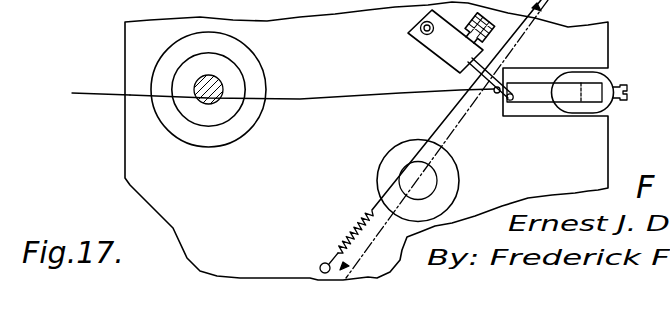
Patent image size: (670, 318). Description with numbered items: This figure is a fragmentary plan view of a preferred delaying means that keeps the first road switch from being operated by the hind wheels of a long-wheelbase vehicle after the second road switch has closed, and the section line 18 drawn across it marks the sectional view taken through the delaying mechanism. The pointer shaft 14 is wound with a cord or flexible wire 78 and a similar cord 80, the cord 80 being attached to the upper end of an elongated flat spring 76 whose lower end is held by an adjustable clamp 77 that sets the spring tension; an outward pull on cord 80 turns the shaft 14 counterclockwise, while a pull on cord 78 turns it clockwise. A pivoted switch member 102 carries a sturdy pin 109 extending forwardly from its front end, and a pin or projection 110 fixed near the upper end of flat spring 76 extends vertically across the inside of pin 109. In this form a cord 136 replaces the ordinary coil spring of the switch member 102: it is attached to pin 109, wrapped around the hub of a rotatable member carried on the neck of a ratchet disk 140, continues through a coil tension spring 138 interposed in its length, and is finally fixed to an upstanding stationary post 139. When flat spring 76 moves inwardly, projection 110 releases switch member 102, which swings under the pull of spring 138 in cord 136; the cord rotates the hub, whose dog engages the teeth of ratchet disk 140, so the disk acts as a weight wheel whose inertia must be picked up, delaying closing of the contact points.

The pointer shaft 14 is at (222, 82).
The section line 18 is at (332, 287).
The flat spring 76 is at (530, 90).
The clamp 77 is at (602, 77).
The cord or flexible wire 78 is at (90, 92).
The cord or flexible wire 80 is at (307, 97).
The switch member 102 is at (420, 47).
The pin 109 is at (469, 67).
The pin or projection 110 is at (488, 118).
The cord 136 is at (447, 113).
The coil tension spring 138 is at (357, 219).
The stationary post 139 is at (318, 264).
The ratchet disk 140 is at (481, 172).